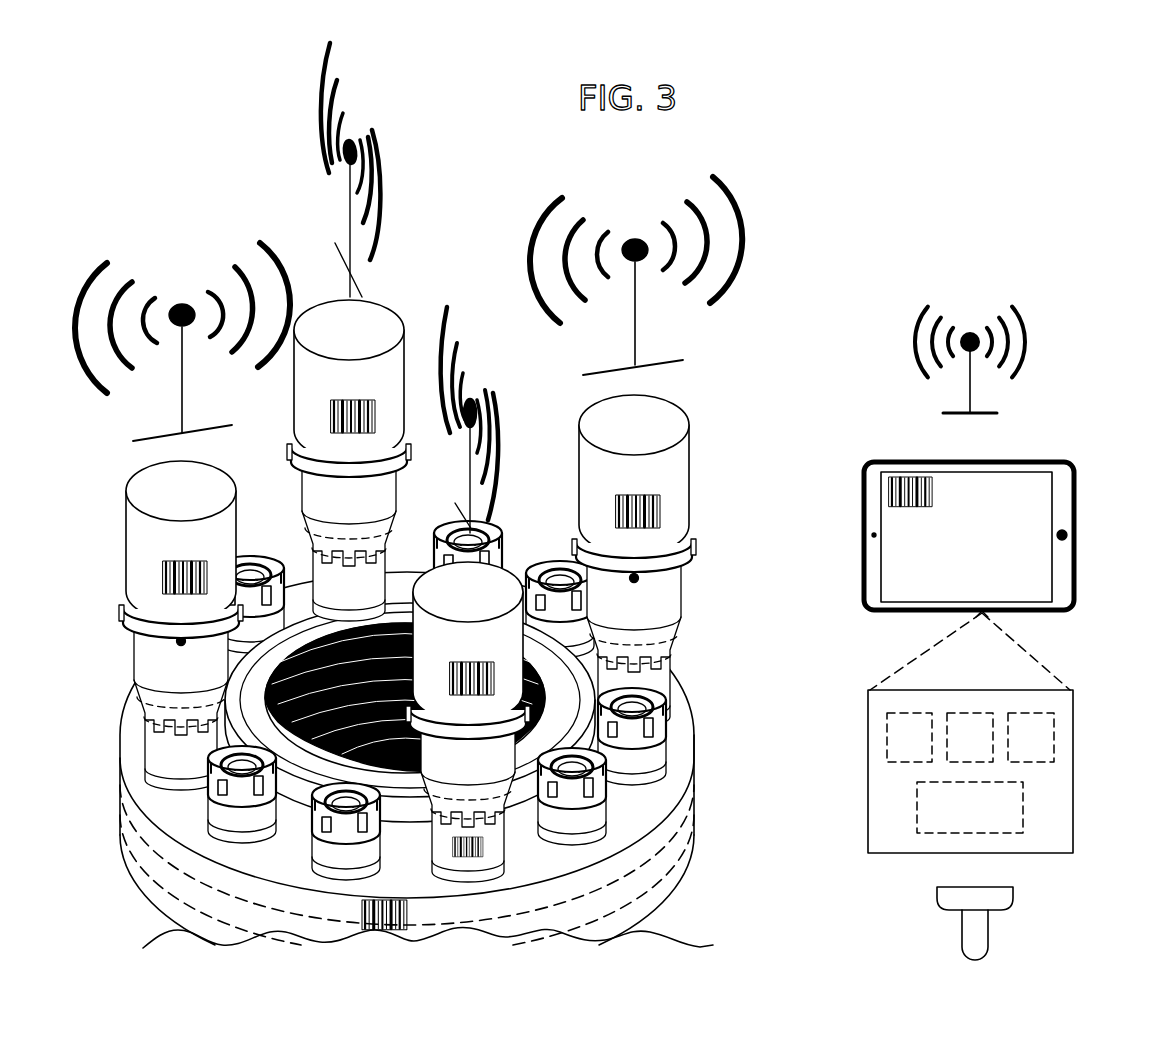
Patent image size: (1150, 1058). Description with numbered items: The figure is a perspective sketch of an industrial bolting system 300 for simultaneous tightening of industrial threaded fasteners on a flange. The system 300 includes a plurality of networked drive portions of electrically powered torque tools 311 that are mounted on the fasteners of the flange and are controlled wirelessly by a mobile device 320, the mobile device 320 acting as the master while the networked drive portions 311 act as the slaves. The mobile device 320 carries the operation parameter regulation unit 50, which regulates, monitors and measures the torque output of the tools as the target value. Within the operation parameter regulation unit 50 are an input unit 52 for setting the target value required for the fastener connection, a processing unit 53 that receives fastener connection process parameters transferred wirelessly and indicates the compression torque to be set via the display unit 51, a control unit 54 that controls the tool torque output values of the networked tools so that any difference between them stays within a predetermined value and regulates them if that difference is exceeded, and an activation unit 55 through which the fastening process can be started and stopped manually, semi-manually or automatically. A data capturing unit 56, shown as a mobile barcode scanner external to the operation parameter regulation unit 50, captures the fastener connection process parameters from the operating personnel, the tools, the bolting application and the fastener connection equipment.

The industrial bolting system 300 is at (395, 495).
The networked drive portions of electrically powered torque tools 311 is at (102, 542).
The mobile device 320 is at (1088, 495).
The operation parameter regulation unit 50 is at (1004, 785).
The display unit 51 is at (1036, 844).
The input unit 52 is at (900, 745).
The processing unit 53 is at (961, 745).
The control unit 54 is at (1022, 745).
The activation unit 55 is at (961, 815).
The data capturing unit 56 is at (966, 943).